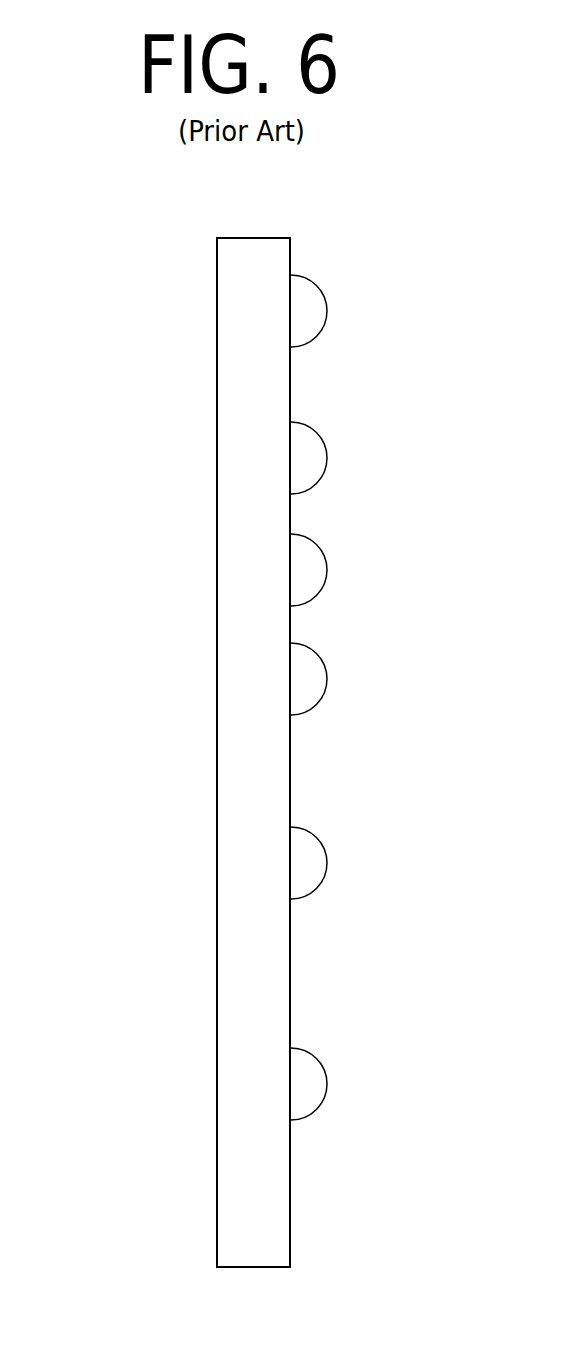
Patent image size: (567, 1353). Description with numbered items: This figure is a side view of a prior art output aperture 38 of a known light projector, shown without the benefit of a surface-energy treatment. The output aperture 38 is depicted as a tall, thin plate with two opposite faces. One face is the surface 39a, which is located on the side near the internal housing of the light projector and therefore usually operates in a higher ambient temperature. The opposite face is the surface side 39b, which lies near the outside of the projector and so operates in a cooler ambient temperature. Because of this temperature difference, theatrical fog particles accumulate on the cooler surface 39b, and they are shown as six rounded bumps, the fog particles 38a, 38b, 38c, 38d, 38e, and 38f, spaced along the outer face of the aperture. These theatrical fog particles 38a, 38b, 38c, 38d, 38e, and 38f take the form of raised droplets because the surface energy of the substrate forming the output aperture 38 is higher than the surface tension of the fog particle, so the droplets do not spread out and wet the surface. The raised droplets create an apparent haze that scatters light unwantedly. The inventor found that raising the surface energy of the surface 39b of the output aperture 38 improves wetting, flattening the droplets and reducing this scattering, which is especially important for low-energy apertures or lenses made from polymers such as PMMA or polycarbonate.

The output aperture 38 is at (203, 235).
The theatrical fog particle 38a is at (338, 310).
The theatrical fog particle 38b is at (338, 467).
The theatrical fog particle 38c is at (330, 573).
The theatrical fog particle 38d is at (340, 675).
The theatrical fog particle 38e is at (332, 872).
The theatrical fog particle 38f is at (335, 1093).
The surface 39a is at (215, 440).
The surface side 39b is at (292, 397).